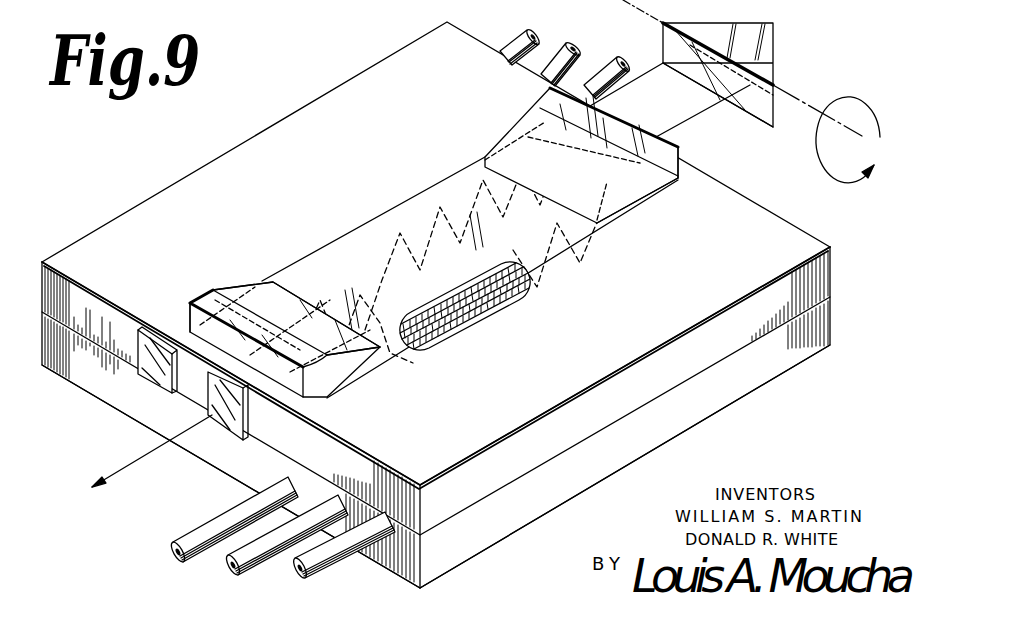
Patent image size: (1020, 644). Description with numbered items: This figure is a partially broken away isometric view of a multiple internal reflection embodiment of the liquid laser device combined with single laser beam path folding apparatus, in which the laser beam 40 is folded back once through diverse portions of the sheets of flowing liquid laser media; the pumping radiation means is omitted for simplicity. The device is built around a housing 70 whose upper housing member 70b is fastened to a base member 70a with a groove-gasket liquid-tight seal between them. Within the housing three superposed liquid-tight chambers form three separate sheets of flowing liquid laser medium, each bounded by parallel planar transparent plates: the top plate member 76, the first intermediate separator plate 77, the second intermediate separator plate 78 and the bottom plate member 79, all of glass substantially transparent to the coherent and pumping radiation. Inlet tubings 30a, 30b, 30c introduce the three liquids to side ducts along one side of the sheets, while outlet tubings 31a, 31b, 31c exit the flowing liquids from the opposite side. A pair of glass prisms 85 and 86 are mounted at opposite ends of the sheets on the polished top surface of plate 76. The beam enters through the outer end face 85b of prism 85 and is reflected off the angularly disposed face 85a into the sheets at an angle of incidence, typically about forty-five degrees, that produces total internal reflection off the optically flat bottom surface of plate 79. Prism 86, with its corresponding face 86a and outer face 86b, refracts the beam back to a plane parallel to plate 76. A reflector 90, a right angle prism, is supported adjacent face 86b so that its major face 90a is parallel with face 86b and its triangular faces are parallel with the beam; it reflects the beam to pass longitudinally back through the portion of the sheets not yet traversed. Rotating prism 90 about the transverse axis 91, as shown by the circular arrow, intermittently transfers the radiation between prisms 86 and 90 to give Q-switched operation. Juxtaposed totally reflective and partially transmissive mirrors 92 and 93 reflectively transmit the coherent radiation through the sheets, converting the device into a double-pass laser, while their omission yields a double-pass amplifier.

The housing 70 is at (793, 368).
The base member 70a is at (830, 325).
The upper housing member 70b is at (830, 268).
The top plate member 76 is at (395, 198).
The first intermediate separator plate 77 is at (440, 291).
The second intermediate separator plate 78 is at (490, 269).
The bottom plate member 79 is at (470, 326).
The glass prism 85 is at (203, 292).
The angularly disposed face 85a is at (238, 287).
The outer end face 85b is at (188, 330).
The glass prism 86 is at (550, 88).
The angularly disposed face of prism 86 86a is at (612, 205).
The outer face 86b is at (680, 150).
The reflector 90 is at (773, 38).
The major face 90a is at (752, 118).
The transverse axis 91 is at (797, 92).
The totally reflective mirror 92 is at (150, 383).
The partially transmissive mirror 93 is at (212, 430).
The laser beam 40 is at (699, 122).
The inlet tubing 30a is at (198, 533).
The inlet tubing 30b is at (267, 532).
The inlet tubing 30c is at (320, 580).
The outlet tubing 31a is at (512, 35).
The outlet tubing 31b is at (583, 50).
The outlet tubing 31c is at (617, 62).